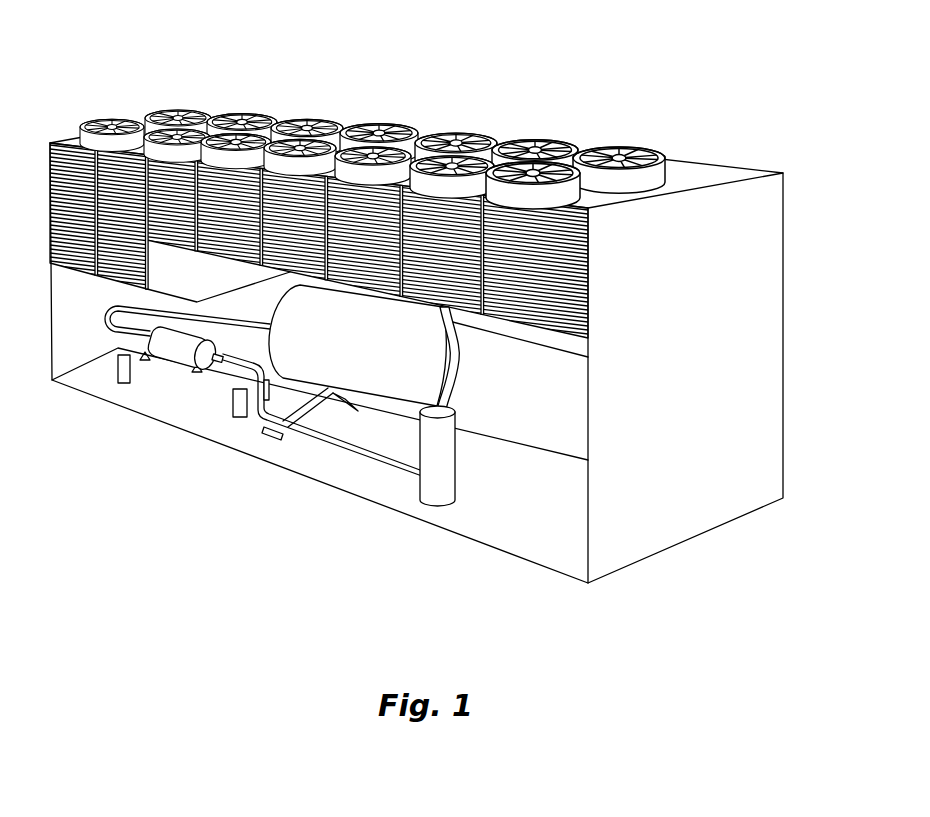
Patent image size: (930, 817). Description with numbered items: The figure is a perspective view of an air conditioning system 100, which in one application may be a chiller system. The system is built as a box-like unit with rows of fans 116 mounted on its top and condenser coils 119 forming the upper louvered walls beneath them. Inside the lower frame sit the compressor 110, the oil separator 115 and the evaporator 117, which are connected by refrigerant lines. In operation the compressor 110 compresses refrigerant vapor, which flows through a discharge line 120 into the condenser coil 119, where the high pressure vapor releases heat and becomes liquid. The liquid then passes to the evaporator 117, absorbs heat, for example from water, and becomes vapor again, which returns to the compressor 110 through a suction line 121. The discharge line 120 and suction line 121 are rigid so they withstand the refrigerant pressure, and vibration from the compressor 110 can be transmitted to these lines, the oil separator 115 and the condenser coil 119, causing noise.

The air conditioning system 100 is at (735, 72).
The compressor 110 is at (173, 360).
The oil separator 115 is at (433, 495).
The fans 116 is at (521, 137).
The evaporator 117 is at (530, 425).
The condenser coil 119 is at (588, 288).
The discharge line 120 is at (312, 438).
The suction line 121 is at (110, 330).